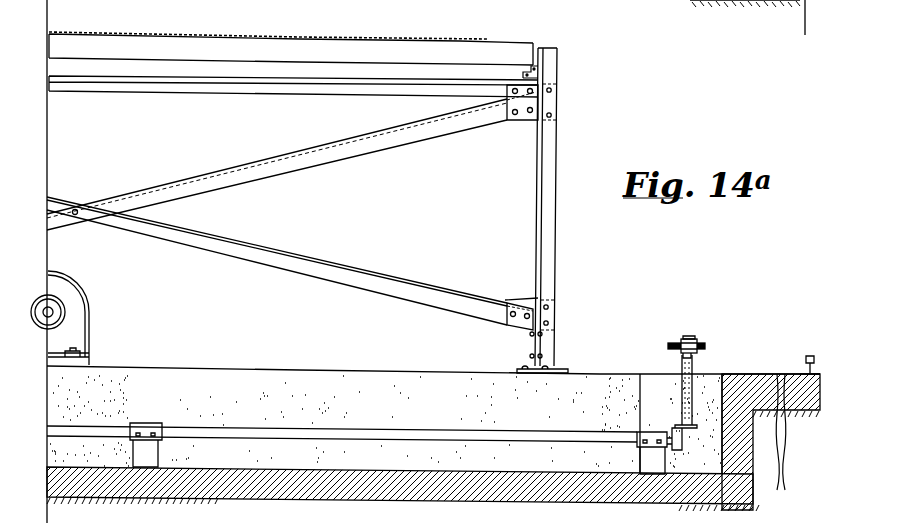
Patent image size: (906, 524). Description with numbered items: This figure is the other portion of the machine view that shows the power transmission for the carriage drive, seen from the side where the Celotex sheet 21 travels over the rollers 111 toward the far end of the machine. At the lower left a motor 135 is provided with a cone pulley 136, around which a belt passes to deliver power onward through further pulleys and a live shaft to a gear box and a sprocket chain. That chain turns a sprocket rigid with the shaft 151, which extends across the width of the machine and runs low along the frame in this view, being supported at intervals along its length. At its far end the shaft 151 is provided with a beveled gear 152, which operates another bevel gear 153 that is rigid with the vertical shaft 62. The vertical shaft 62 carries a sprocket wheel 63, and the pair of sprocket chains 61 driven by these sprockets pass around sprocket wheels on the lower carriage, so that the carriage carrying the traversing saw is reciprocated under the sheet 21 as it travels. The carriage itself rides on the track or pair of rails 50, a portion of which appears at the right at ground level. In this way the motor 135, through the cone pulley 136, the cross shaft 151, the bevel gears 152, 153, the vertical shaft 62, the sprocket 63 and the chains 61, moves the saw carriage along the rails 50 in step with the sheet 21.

The Celotex sheet 21 is at (466, 40).
The rollers 111 is at (383, 57).
The motor 135 is at (60, 283).
The cone pulley 136 is at (52, 306).
The shaft 151 is at (110, 430).
The beveled gear 152 is at (672, 442).
The bevel gear 153 is at (684, 427).
The sprocket chains 61 is at (702, 347).
The vertical shafts 62 is at (688, 340).
The sprocket wheels 63 is at (697, 344).
The track or pair of rails 50 is at (810, 360).